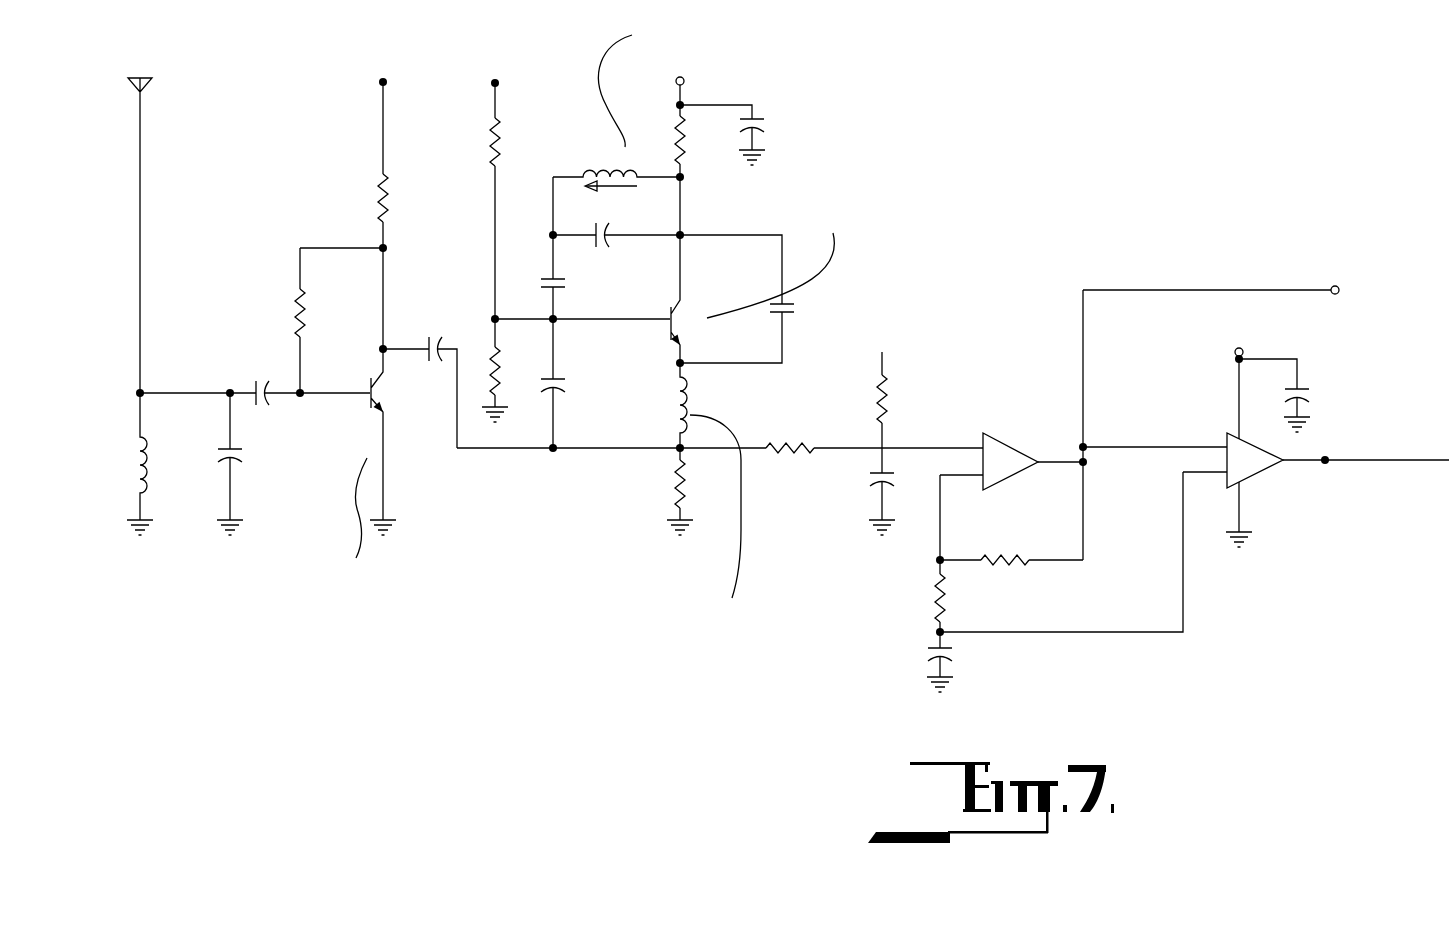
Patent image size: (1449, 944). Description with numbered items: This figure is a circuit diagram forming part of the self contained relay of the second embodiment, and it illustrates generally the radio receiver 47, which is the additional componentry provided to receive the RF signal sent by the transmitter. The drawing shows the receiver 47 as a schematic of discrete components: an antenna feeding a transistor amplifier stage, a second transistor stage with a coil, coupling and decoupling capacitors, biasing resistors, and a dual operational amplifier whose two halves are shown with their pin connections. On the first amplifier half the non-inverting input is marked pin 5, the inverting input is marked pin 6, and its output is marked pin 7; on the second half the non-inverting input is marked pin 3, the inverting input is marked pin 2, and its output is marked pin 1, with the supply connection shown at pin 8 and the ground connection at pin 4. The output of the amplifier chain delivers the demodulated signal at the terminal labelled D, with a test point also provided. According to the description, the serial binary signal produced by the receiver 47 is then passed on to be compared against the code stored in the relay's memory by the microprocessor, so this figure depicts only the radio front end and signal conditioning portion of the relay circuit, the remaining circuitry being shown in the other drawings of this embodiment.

The radio receiver 47 is at (320, 657).
The op-amp U6B non-inverting input pin 5 is at (916, 434).
The op-amp U6B inverting input pin 6 is at (961, 467).
The op-amp U6B output pin 7 is at (1060, 450).
The op-amp U6A non-inverting input pin 3 is at (1155, 433).
The op-amp U6A inverting input pin 2 is at (1205, 473).
The op-amp U6A output pin 1 is at (1366, 447).
The op-amp supply pin 8 is at (1221, 397).
The op-amp ground pin 4 is at (1227, 514).